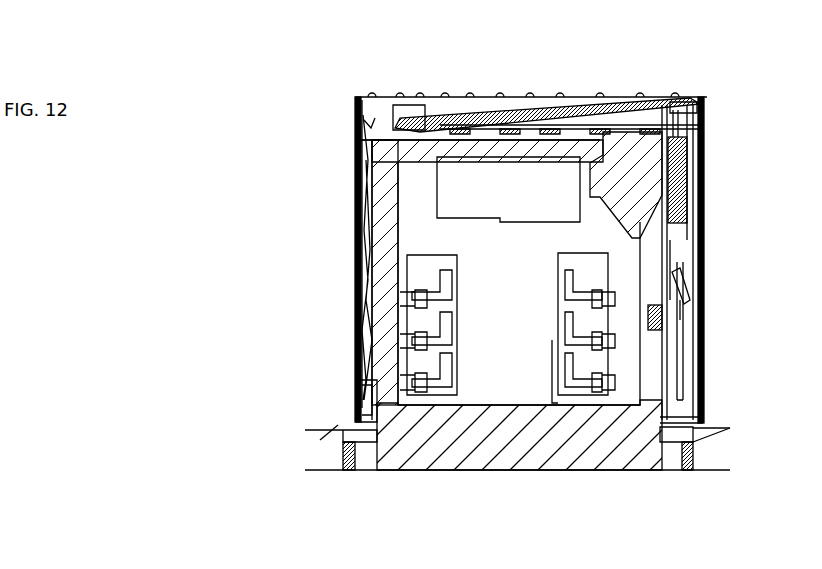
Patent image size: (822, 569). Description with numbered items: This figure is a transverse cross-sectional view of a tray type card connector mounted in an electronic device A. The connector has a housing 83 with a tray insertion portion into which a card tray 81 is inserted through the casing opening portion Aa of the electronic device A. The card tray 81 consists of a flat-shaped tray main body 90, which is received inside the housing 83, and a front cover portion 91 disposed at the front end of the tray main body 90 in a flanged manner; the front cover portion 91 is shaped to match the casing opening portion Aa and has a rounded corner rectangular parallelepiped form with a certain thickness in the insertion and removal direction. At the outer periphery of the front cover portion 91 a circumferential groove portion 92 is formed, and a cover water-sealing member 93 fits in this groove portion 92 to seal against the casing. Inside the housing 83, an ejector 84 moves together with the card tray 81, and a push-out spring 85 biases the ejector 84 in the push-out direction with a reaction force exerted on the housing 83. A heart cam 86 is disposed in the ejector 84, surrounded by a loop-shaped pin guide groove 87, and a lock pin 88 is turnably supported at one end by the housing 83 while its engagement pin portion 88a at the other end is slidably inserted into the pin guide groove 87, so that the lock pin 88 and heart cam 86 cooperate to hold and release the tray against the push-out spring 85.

The card tray 81 is at (356, 286).
The housing 83 is at (645, 96).
The ejector 84 is at (665, 138).
The push-out spring 85 is at (705, 150).
The heart cam 86 is at (700, 280).
The pin guide groove 87 is at (700, 242).
The lock pin 88 is at (700, 360).
The engagement pin portion 88a is at (700, 302).
The tray main body 90 is at (353, 230).
The front cover portion 91 is at (535, 473).
The groove portion 92 is at (690, 471).
The cover water-sealing member 93 is at (700, 455).
The electronic device A is at (330, 473).
The casing opening portion Aa is at (692, 420).